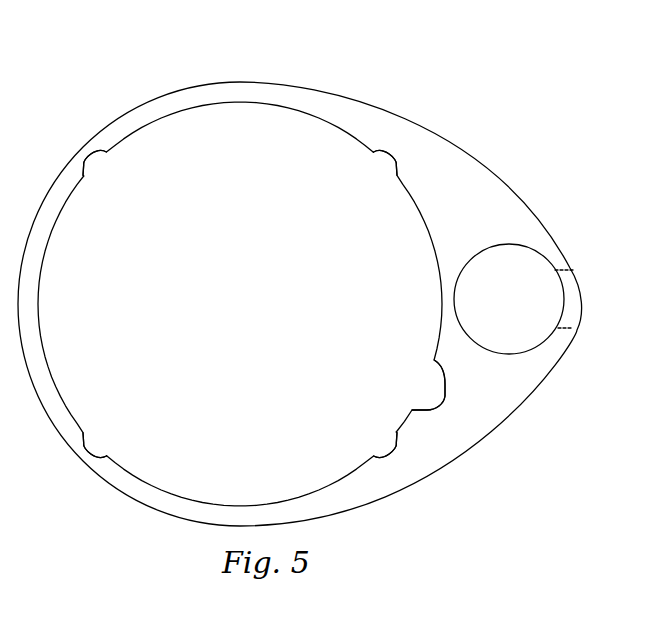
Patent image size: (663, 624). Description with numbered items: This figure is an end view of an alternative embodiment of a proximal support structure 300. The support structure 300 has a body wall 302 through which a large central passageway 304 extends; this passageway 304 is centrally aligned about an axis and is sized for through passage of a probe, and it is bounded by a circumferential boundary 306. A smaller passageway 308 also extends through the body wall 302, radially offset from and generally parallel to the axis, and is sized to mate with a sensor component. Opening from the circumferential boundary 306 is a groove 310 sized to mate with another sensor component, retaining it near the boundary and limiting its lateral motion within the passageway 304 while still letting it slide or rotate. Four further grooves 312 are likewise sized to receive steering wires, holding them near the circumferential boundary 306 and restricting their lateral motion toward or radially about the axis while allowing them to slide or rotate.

The proximal support structure 300 is at (386, 84).
The body wall 302 is at (456, 439).
The passageway 304 is at (258, 320).
The circumferential boundary 306 is at (138, 476).
The passageway 308 is at (483, 272).
The groove 310 is at (437, 373).
The grooves 312 is at (95, 158).